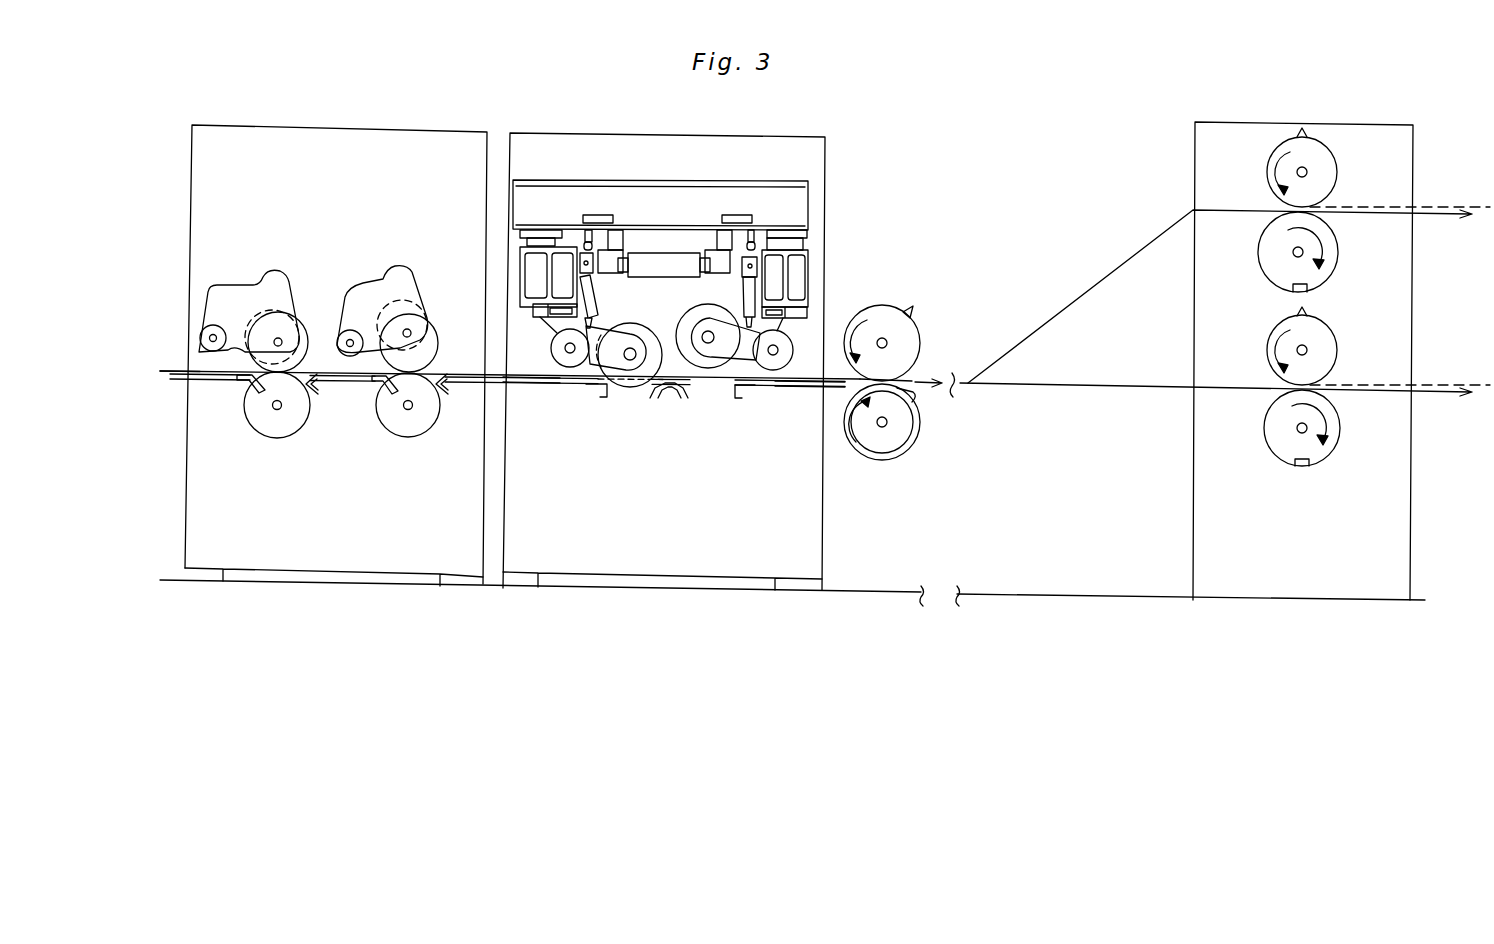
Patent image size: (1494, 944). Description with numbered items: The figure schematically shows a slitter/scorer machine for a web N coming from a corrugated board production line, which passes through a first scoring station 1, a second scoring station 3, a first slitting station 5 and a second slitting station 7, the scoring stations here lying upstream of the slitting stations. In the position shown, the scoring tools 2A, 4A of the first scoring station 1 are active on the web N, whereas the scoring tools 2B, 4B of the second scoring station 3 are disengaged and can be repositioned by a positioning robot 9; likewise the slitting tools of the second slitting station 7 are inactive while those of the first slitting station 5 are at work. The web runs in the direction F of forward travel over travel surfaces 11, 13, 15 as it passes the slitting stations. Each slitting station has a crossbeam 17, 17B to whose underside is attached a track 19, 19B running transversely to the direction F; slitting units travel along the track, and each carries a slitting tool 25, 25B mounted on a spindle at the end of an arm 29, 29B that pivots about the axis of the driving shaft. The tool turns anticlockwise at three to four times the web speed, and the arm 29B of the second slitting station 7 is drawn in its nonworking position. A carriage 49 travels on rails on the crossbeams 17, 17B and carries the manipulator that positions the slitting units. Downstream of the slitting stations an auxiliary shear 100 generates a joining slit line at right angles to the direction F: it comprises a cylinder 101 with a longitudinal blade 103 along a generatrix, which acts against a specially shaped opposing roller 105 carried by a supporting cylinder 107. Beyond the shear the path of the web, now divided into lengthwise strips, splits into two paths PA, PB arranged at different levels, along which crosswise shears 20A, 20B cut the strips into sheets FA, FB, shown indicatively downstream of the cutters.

The first scoring station 1 is at (280, 262).
The second scoring station 3 is at (409, 261).
The scoring tool 2A is at (303, 323).
The scoring tool 2B is at (436, 328).
The scoring tool 4A is at (288, 425).
The scoring tool 4B is at (416, 425).
The web N is at (181, 370).
The crossbeam 17 is at (566, 250).
The carriage 49 is at (707, 200).
The positioning robot 9 is at (663, 250).
The track 19 is at (583, 306).
The first slitting station 5 is at (656, 328).
The second slitting station 7 is at (692, 305).
The travel surface 11 is at (559, 390).
The arm 29 is at (591, 366).
The slitting tool 25 is at (628, 384).
The travel surface 13 is at (672, 390).
The slitting tool 25B is at (707, 367).
The arm 29B is at (750, 357).
The travel surface 15 is at (810, 396).
The crossbeam 17B is at (827, 251).
The track 19B is at (827, 285).
The longitudinal blade 103 is at (912, 310).
The cylinder 101 is at (907, 345).
The auxiliary shear 100 is at (927, 366).
The opposing roller 105 is at (915, 447).
The supporting cylinder 107 is at (877, 441).
The direction of forward travel F is at (917, 389).
The path PA is at (1120, 267).
The path PB is at (1113, 385).
The crosswise shear 20A is at (1343, 198).
The crosswise shear 20B is at (1341, 378).
The sheet FA is at (1393, 212).
The sheet FB is at (1390, 388).